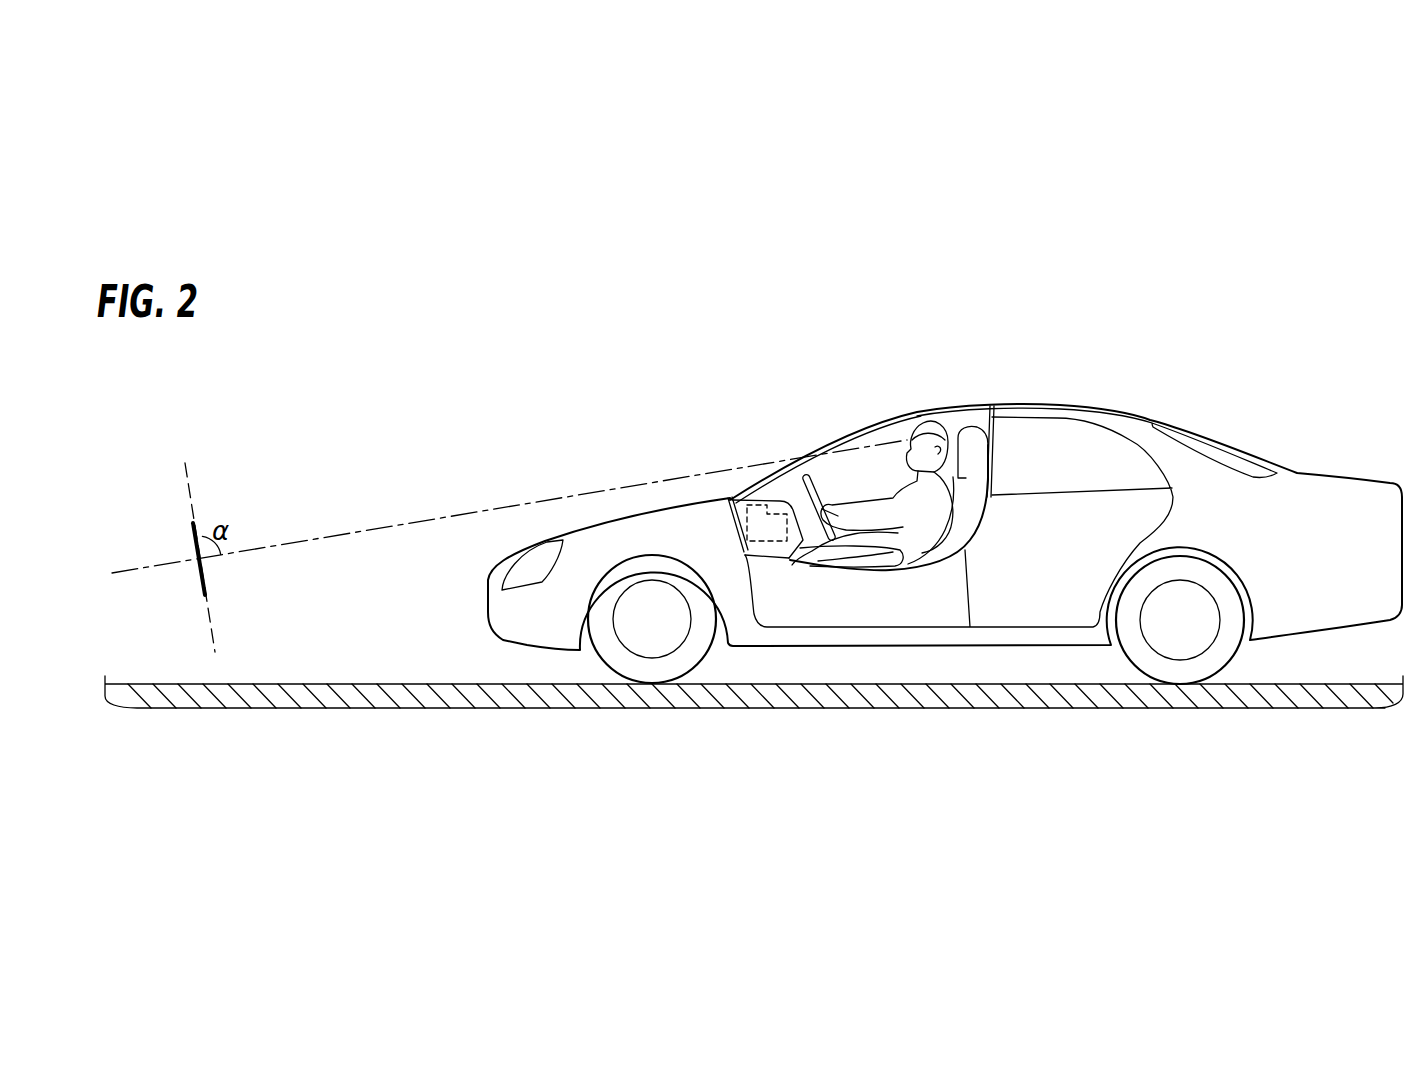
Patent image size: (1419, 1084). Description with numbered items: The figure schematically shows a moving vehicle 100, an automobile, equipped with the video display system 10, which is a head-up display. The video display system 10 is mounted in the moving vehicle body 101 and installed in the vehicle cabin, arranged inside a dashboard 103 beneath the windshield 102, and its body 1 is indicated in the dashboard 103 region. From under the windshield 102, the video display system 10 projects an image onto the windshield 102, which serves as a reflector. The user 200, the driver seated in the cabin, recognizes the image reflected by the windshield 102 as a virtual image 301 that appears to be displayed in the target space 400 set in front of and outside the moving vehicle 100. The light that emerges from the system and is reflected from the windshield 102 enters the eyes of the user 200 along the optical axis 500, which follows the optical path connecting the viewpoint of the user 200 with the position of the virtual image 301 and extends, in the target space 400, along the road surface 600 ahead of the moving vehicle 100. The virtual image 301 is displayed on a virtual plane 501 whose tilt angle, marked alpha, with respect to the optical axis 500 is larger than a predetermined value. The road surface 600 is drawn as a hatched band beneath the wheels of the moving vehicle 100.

The body 1 is at (763, 542).
The video display system 10 is at (747, 525).
The moving vehicle 100 is at (1125, 407).
The moving vehicle body 101 is at (1050, 414).
The windshield 102 is at (843, 434).
The dashboard 103 is at (792, 545).
The user 200 is at (938, 432).
The virtual image 301 is at (192, 537).
The target space 400 is at (382, 472).
The optical axis 500 is at (131, 571).
The virtual plane 501 is at (188, 475).
The road surface 600 is at (338, 683).